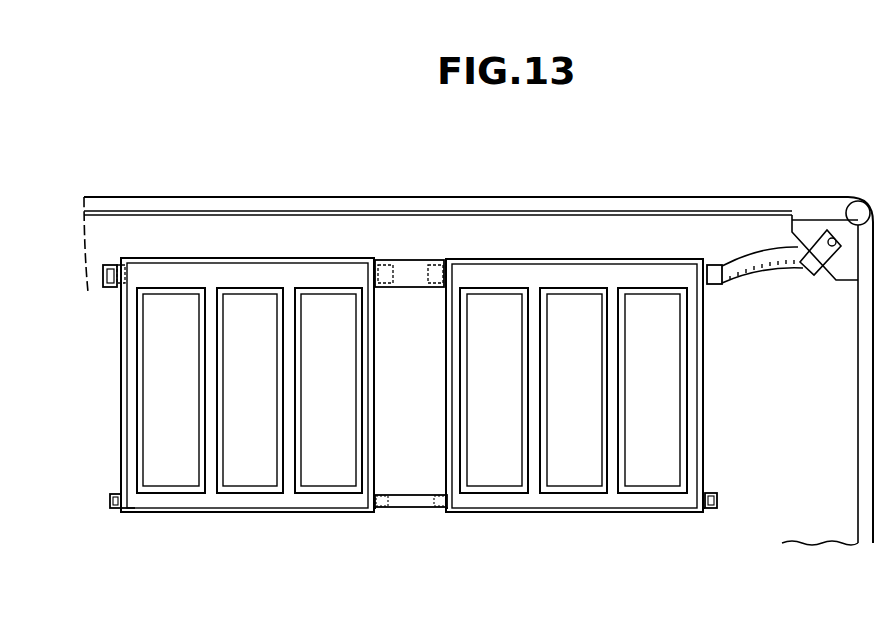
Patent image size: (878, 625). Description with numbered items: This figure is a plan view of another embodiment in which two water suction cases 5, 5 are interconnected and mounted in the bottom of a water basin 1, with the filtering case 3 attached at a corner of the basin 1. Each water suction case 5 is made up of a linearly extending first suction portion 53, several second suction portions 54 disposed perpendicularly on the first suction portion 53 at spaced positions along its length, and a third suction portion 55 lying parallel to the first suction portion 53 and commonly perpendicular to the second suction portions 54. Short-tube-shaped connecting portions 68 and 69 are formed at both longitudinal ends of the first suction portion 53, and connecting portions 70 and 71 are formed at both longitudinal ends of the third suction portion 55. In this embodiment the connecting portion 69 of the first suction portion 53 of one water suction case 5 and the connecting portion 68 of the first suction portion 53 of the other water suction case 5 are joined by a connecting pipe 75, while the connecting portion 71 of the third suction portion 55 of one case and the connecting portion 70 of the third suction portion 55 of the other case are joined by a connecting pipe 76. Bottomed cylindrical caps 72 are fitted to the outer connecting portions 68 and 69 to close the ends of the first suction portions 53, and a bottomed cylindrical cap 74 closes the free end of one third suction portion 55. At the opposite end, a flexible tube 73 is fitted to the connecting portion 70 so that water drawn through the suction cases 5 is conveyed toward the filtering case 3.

The basin 1 is at (566, 200).
The filtering case 3 is at (827, 281).
The water suction case 5 is at (307, 517).
The first suction portion 53 is at (258, 508).
The second suction portions 54 is at (288, 388).
The third suction portion 55 is at (280, 270).
The connecting portion 68 is at (373, 514).
The connecting portion 69 is at (122, 514).
The connecting portion 70 is at (388, 264).
The connecting portion 71 is at (122, 264).
The bottomed cylindrical caps 72 is at (114, 493).
The flexible tube 73 is at (748, 278).
The bottomed cylindrical cap 74 is at (110, 264).
The connecting pipe 75 is at (406, 494).
The connecting pipe 76 is at (426, 281).